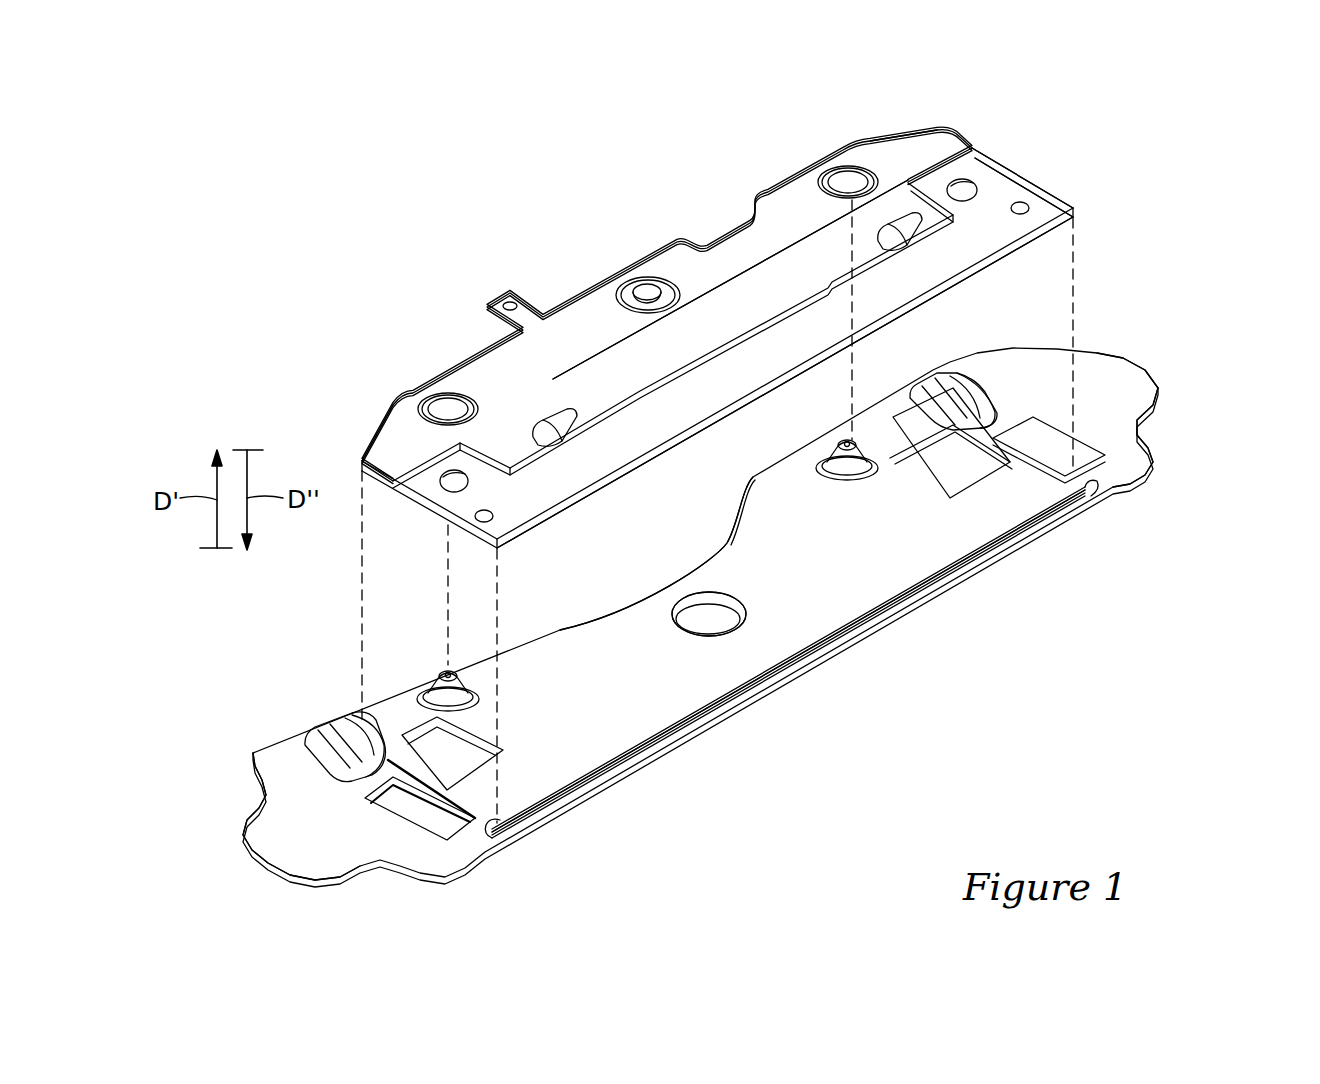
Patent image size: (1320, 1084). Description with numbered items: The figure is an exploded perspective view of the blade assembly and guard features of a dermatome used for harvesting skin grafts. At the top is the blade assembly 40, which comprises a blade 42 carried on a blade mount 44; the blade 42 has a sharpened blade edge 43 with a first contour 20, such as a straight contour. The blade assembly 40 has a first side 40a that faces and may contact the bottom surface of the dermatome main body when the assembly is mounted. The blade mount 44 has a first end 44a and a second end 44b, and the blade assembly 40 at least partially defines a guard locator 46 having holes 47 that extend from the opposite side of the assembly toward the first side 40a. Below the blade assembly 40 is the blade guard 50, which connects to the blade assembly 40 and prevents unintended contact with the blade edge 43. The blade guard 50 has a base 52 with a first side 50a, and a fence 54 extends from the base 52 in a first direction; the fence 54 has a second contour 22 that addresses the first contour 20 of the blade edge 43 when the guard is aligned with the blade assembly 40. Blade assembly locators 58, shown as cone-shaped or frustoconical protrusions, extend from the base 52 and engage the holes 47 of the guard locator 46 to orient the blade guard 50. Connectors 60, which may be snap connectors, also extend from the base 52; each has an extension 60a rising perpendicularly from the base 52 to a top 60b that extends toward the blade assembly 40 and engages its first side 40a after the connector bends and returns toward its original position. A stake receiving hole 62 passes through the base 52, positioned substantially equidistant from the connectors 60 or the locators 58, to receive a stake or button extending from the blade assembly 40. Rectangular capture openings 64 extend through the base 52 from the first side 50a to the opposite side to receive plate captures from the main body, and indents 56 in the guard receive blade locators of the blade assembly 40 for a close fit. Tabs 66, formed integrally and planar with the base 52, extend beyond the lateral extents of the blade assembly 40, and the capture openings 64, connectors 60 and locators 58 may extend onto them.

The first contour 20 is at (533, 523).
The second contour 22 is at (708, 712).
The blade assembly 40 is at (1030, 158).
The first side 40a is at (590, 352).
The blade 42 is at (1045, 210).
The blade edge 43 is at (1003, 258).
The blade mount 44 is at (923, 150).
The first end 44a is at (393, 427).
The second end 44b is at (897, 140).
The guard locator 46 is at (853, 168).
The hole 47 is at (838, 177).
The blade guard 50 is at (1132, 340).
The first side 50a is at (834, 561).
The base 52 is at (608, 633).
The fence 54 is at (960, 560).
The indent 56 is at (933, 477).
The blade assembly locator 58 is at (842, 452).
The connector 60 is at (957, 382).
The extension 60a is at (993, 397).
The top 60b is at (927, 380).
The stake receiving hole 62 is at (690, 603).
The capture opening 64 is at (1090, 462).
The tab 66 is at (1153, 380).